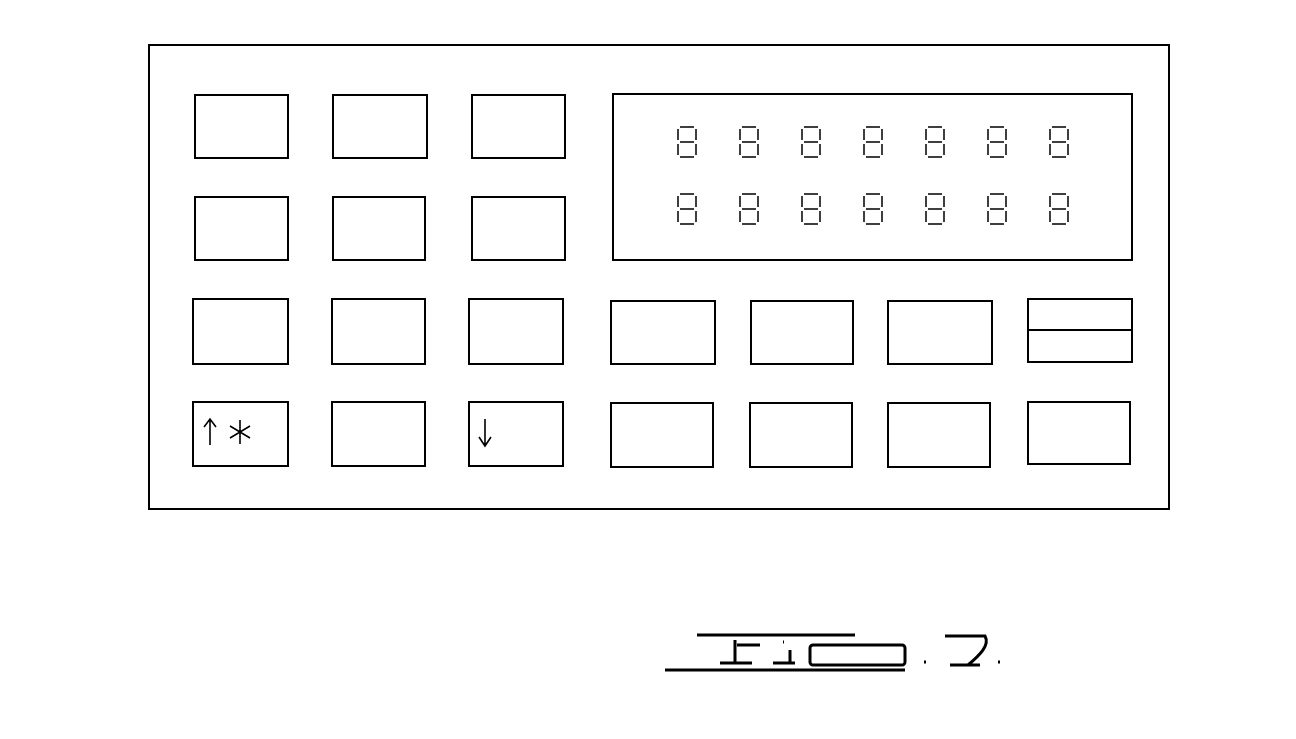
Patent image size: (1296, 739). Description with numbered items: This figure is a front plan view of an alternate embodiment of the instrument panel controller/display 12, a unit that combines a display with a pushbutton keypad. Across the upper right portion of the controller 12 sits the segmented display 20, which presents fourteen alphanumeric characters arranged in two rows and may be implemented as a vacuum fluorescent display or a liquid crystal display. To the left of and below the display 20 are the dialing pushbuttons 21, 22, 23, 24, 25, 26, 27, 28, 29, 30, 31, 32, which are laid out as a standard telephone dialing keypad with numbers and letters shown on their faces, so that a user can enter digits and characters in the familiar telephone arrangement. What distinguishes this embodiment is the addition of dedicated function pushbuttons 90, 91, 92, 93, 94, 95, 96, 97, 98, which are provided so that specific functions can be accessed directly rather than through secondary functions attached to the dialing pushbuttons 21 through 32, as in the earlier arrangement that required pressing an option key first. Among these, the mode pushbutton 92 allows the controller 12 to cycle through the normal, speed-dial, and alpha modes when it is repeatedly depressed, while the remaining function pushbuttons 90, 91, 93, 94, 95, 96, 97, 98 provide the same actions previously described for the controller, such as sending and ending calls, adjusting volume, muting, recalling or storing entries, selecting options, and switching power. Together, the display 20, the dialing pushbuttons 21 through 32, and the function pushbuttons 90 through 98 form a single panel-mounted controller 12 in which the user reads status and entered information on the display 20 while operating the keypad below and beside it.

The instrument panel controller/display 12 is at (1187, 68).
The segmented display 20 is at (829, 94).
The pushbutton 21 is at (195, 122).
The pushbutton 22 is at (352, 95).
The pushbutton 23 is at (505, 95).
The pushbutton 24 is at (195, 237).
The pushbutton 25 is at (345, 201).
The pushbutton 26 is at (483, 207).
The pushbutton 27 is at (193, 340).
The pushbutton 28 is at (337, 323).
The pushbutton 29 is at (476, 323).
The pushbutton 30 is at (193, 445).
The pushbutton 31 is at (360, 466).
The pushbutton 32 is at (513, 466).
The pushbutton 90 is at (688, 365).
The pushbutton 91 is at (828, 365).
The mode pushbutton 92 is at (983, 365).
The pushbutton 93 is at (1133, 308).
The pushbutton 94 is at (1133, 350).
The pushbutton 95 is at (660, 467).
The pushbutton 96 is at (800, 467).
The pushbutton 97 is at (942, 467).
The pushbutton 98 is at (1098, 464).